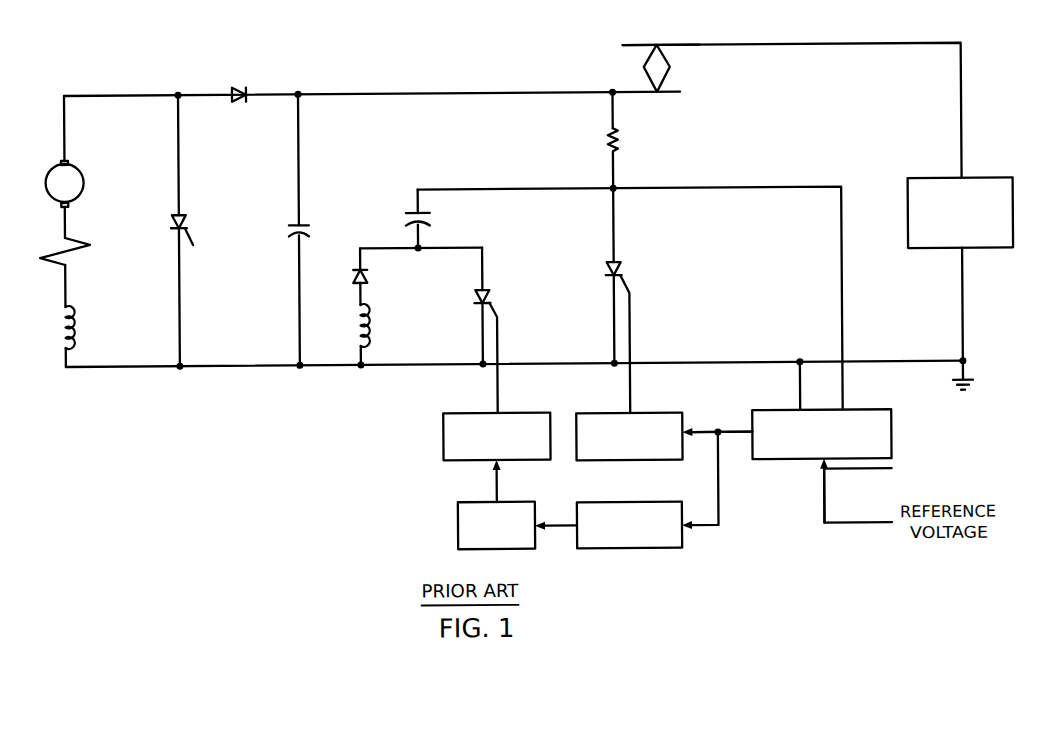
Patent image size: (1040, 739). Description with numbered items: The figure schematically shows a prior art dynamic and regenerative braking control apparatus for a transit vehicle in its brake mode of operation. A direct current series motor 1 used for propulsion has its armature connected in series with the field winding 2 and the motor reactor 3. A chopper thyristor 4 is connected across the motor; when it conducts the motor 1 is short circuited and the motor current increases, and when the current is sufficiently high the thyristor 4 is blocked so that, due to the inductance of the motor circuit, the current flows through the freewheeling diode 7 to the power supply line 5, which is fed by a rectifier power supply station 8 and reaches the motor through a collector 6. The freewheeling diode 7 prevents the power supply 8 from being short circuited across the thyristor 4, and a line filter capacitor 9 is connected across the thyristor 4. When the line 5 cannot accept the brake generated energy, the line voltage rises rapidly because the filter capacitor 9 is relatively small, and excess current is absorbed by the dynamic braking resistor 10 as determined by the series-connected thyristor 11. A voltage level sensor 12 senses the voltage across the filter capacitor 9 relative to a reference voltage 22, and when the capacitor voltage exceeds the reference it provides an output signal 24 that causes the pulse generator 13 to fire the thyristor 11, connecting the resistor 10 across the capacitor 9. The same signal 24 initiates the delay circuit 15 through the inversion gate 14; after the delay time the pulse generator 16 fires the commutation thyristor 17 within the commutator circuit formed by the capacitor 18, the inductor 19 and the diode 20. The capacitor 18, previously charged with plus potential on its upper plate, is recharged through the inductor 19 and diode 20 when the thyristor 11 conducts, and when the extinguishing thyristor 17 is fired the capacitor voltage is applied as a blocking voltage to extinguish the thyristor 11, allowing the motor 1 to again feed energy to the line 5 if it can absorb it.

The direct current series motor 1 is at (81, 171).
The field winding 2 is at (58, 247).
The motor reactor 3 is at (60, 323).
The chopper thyristor 4 is at (189, 224).
The power supply line 5 is at (643, 48).
The collector 6 is at (669, 72).
The freewheeling diode 7 is at (240, 88).
The rectifier power supply station 8 is at (975, 184).
The line filter capacitor 9 is at (287, 232).
The dynamic braking resistor 10 is at (606, 143).
The thyristor 11 is at (604, 270).
The voltage level sensor 12 is at (866, 415).
The pulse generator 13 is at (593, 417).
The inversion gate 14 is at (666, 506).
The delay circuit 15 is at (529, 505).
The pulse generator 16 is at (529, 416).
The commutation thyristor 17 is at (494, 300).
The capacitor 18 is at (404, 225).
The inductor 19 is at (356, 323).
The diode 20 is at (350, 279).
The reference voltage 22 is at (820, 500).
The output signal 24 is at (712, 434).